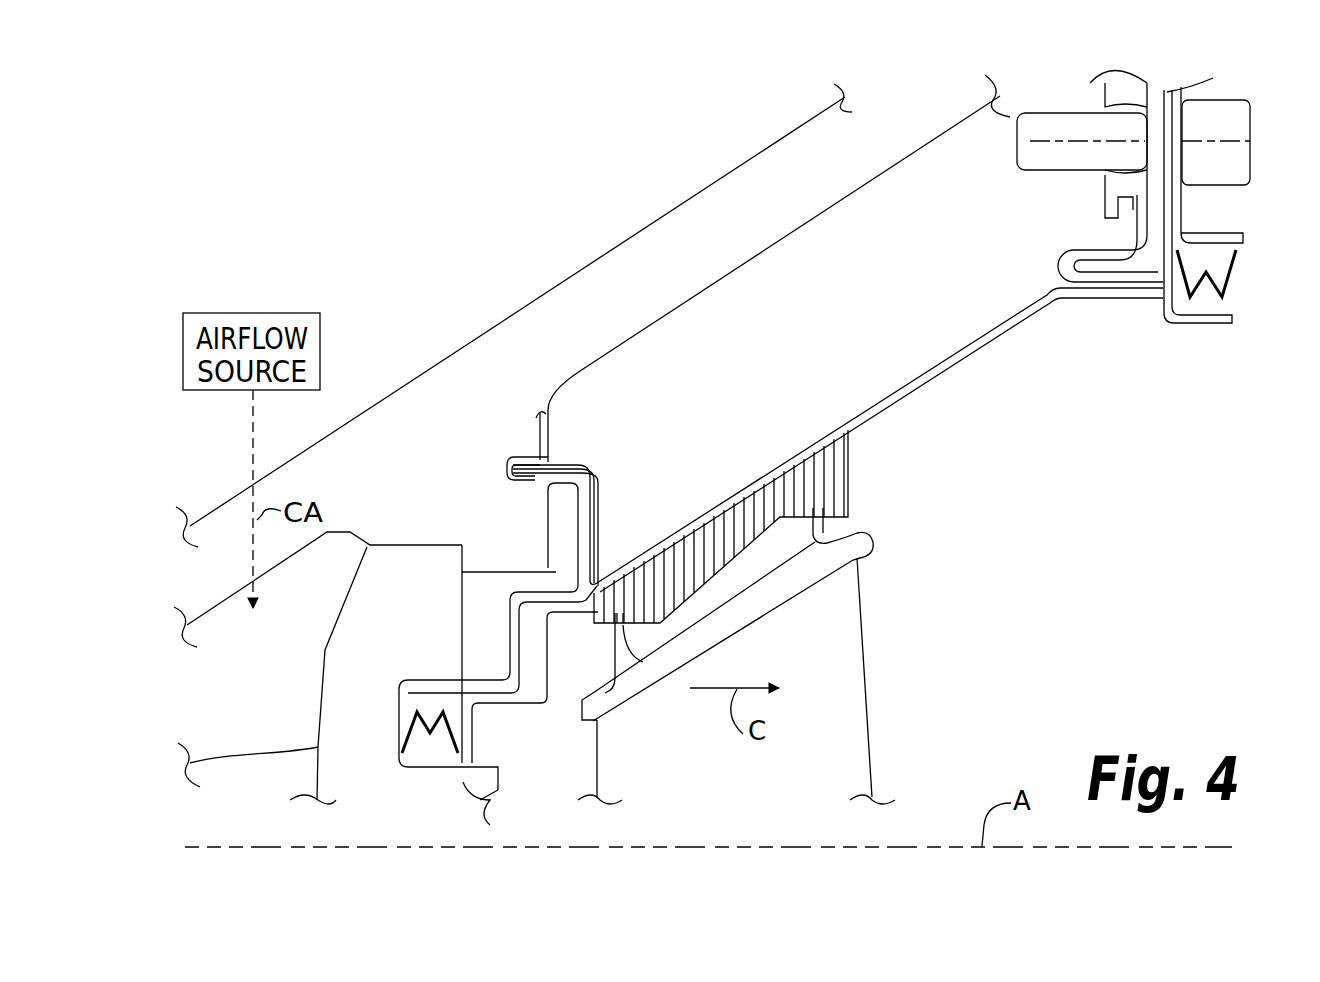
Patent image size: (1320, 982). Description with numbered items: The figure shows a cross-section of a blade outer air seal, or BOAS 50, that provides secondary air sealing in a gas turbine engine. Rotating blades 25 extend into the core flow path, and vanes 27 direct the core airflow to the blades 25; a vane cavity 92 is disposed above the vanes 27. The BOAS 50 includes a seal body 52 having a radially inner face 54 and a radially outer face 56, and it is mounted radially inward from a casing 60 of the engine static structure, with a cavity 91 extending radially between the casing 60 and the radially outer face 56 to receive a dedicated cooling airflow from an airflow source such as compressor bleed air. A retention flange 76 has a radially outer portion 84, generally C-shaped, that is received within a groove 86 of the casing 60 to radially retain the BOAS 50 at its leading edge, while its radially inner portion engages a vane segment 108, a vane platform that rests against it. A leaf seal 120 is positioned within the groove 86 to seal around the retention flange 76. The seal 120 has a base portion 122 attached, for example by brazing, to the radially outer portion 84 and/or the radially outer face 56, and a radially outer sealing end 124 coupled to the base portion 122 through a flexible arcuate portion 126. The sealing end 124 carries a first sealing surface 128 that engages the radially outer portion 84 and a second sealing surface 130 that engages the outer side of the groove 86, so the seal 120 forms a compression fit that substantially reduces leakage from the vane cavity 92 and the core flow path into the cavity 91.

The blades 25 is at (753, 790).
The vanes 27 is at (255, 810).
The BOAS 50 is at (923, 332).
The seal body 52 is at (897, 385).
The radially inner face 54 is at (897, 410).
The radially outer face 56 is at (822, 440).
The casing 60 is at (640, 250).
The retention flange 76 is at (556, 571).
The radially outer portion 84 is at (548, 506).
The groove 86 is at (551, 415).
The cavity 91 is at (890, 262).
The vane cavity 92 is at (267, 677).
The vane segment 108 is at (427, 605).
The leaf seal 120 is at (557, 496).
The base portion 122 is at (600, 550).
The radially outer sealing end 124 is at (520, 432).
The flexible arcuate portion 126 is at (597, 478).
The first sealing surface 128 is at (510, 478).
The second sealing surface 130 is at (518, 458).